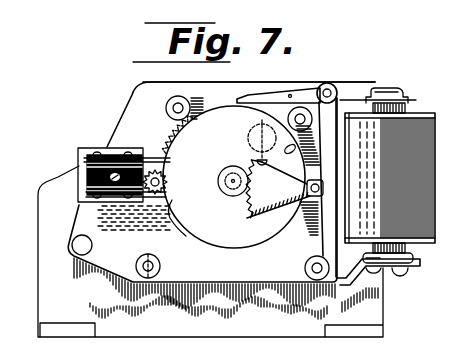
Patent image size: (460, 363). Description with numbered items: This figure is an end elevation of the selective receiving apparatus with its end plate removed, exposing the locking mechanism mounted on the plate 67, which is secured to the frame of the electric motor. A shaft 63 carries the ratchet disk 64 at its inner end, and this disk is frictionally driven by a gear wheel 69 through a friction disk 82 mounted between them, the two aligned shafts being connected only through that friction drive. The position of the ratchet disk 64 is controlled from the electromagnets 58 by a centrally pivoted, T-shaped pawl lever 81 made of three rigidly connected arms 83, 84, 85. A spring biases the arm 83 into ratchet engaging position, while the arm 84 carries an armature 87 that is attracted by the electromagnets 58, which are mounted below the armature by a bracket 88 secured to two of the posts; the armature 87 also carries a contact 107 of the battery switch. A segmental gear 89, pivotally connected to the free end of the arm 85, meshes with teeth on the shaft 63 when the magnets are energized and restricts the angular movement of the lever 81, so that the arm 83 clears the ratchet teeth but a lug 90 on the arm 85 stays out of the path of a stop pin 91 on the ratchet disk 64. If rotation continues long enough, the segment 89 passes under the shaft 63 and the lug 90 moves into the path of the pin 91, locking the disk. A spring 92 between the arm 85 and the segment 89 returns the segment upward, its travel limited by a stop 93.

The electromagnets 58 is at (390, 183).
The shaft 63 is at (232, 192).
The ratchet disk 64 is at (184, 218).
The plate 67 is at (221, 182).
The gear wheel 69 is at (163, 180).
The pawl lever 81 is at (333, 84).
The friction disk 82 is at (137, 186).
The arm 83 is at (265, 94).
The arm 84 is at (373, 82).
The arm 85 is at (322, 160).
The armature 87 is at (391, 102).
The bracket 88 is at (344, 284).
The segmental gear 89 is at (241, 177).
The lug 90 is at (307, 190).
The stop pin 91 is at (277, 150).
The spring 92 is at (288, 174).
The stop 93 is at (256, 127).
The contact 107 is at (402, 88).